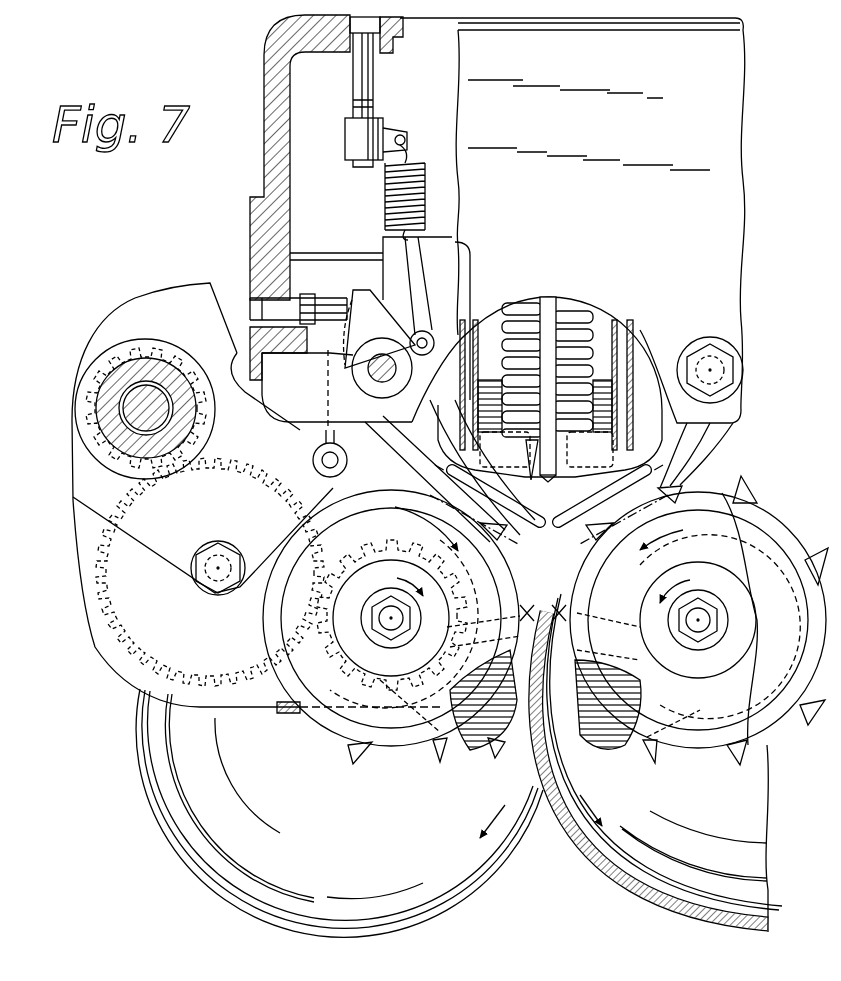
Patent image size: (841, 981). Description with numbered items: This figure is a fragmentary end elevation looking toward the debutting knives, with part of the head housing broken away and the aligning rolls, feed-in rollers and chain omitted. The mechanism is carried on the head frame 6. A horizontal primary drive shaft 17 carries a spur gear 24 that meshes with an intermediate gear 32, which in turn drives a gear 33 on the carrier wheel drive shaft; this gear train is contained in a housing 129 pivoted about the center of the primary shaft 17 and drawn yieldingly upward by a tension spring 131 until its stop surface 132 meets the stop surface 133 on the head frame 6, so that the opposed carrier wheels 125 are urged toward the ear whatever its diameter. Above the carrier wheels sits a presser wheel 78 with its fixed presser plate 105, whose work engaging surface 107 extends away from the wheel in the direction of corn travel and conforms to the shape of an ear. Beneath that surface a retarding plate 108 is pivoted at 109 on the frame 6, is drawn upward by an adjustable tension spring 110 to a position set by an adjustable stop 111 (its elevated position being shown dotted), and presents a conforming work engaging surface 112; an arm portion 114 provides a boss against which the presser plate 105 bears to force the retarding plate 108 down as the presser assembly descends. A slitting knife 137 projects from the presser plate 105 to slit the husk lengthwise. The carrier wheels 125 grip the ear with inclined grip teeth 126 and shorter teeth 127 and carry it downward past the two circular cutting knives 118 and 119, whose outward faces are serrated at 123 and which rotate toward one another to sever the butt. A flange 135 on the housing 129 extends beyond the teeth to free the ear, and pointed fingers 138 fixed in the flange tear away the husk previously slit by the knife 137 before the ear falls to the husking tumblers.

The head frame 6 is at (260, 196).
The primary drive shaft 17 is at (147, 398).
The spur gear 24 is at (198, 364).
The intermediate gear 32 is at (112, 618).
The carrier wheel drive shaft gear 33 is at (391, 619).
The presser wheel 78 is at (568, 315).
The presser plate 105 is at (493, 440).
The work engaging surface 107 is at (517, 489).
The retarding plate 108 is at (418, 468).
The pivotal mounting 109 is at (375, 369).
The tension spring 110 is at (420, 189).
The adjustable stop 111 is at (330, 299).
The work engaging surface 112 is at (437, 432).
The arm portion 114 is at (440, 322).
The circular cutting knife 118 is at (432, 900).
The circular cutting knife 119 is at (643, 873).
The serration 123 is at (582, 853).
The carrier wheel 125 is at (398, 721).
The grip tooth 126 is at (352, 764).
The grip tooth 127 is at (350, 748).
The housing 129 is at (150, 540).
The tension spring 131 is at (363, 329).
The stop surface 132 is at (290, 428).
The stop surface 133 is at (322, 442).
The flange 135 is at (492, 746).
The slitting knife 137 is at (531, 480).
The pointed finger 138 is at (544, 604).